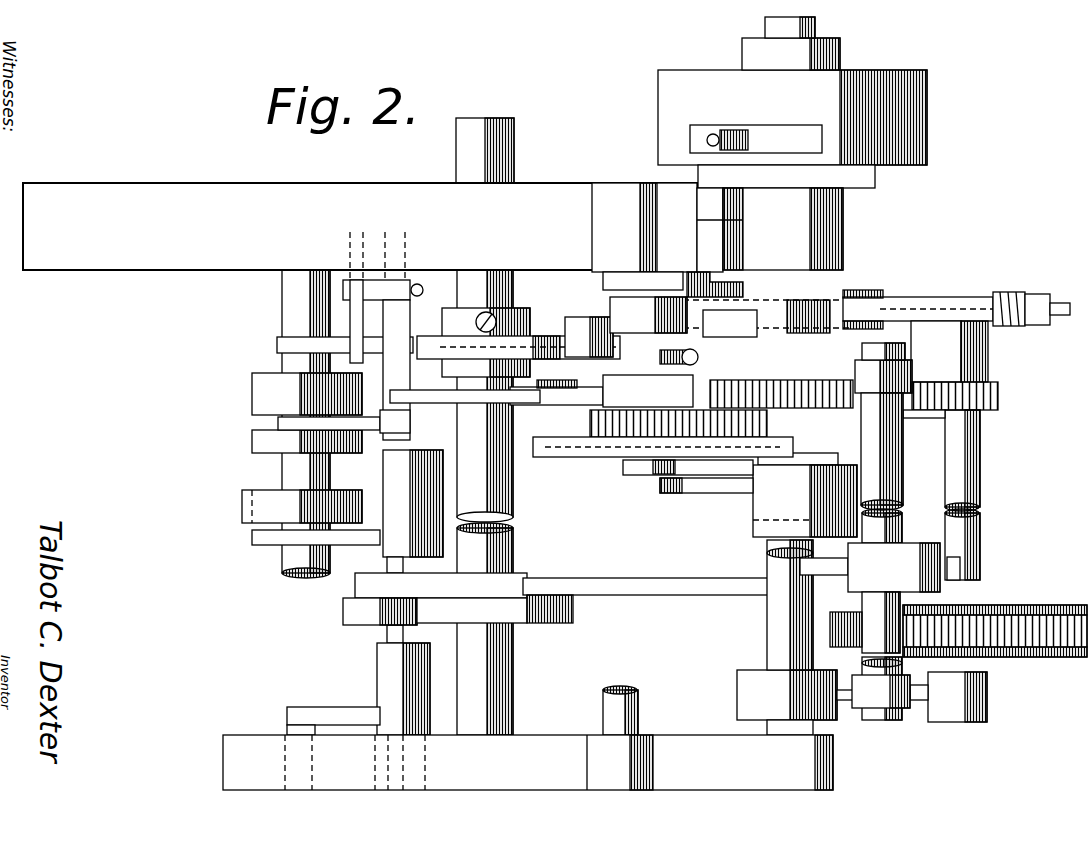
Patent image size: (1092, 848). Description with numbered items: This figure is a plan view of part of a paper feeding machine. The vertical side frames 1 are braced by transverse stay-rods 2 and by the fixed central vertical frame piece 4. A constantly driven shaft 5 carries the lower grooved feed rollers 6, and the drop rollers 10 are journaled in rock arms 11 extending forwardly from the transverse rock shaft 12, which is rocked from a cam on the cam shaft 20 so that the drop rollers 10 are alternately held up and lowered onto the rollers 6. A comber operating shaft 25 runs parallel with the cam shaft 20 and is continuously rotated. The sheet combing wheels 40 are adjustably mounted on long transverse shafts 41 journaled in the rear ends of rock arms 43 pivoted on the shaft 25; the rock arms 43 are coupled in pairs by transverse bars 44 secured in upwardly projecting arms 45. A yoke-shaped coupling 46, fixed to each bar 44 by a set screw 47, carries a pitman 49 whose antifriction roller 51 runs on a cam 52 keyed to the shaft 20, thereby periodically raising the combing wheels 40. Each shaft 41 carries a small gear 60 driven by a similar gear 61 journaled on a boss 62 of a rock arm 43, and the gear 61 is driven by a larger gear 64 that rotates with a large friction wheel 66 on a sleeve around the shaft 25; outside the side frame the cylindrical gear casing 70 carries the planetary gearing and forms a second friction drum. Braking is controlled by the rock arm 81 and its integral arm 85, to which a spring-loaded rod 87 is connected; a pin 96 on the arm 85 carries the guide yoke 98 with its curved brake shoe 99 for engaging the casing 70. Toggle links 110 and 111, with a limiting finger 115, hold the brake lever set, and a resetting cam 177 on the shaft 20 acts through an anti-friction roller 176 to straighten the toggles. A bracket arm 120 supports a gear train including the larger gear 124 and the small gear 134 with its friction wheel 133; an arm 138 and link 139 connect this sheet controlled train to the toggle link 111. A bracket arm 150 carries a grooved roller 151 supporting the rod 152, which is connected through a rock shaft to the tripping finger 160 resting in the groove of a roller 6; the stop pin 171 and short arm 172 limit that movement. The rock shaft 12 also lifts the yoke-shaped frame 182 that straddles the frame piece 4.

The vertical side frames 1 is at (333, 186).
The transverse stay-rods 2 is at (767, 560).
The fixed central vertical frame piece 4 is at (548, 737).
The constantly driven shaft 5 is at (295, 300).
The lower grooved feed rollers 6 is at (265, 395).
The drop rollers 10 is at (248, 512).
The rock arms 11 is at (280, 536).
The transverse rock shaft 12 is at (428, 455).
The cam shaft 20 is at (513, 480).
The comber operating shaft 25 is at (765, 30).
The sheet combing wheels 40 is at (1045, 612).
The transverse shafts 41 is at (975, 482).
The rock arms 43 is at (950, 350).
The transverse bars 44 is at (890, 488).
The upwardly projecting arms 45 is at (890, 710).
The yoke-shaped coupling 46 is at (897, 560).
The set screw 47 is at (961, 563).
The pitman 49 is at (648, 585).
The antifriction roller 51 is at (360, 618).
The cam 52 is at (446, 606).
The small gear wheel 60 is at (1000, 392).
The gear wheel 61 is at (928, 412).
The boss 62 is at (925, 360).
The larger gear 64 is at (782, 388).
The large friction wheel 66 is at (900, 290).
The cylindrical gear casing 70 is at (912, 130).
The rock arm 81 is at (677, 265).
The rock arm 85 is at (725, 290).
The rod 87 is at (922, 300).
The pin 96 is at (712, 133).
The guide yoke 98 is at (875, 178).
The curved brake shoe 99 is at (790, 125).
The toggle link 110 is at (800, 318).
The toggle link 111 is at (690, 325).
The finger 115 is at (757, 318).
The bracket arm 120 is at (668, 478).
The larger gear 124 is at (725, 490).
The friction wheel 133 is at (648, 391).
The small gear wheel 134 is at (625, 445).
The arm 138 is at (662, 360).
The link 139 is at (610, 465).
The bracket arm 150 is at (635, 470).
The grooved roller 151 is at (550, 392).
The rod 152 is at (582, 392).
The tripping finger 160 is at (280, 424).
The stop pin 171 is at (352, 285).
The short arm 172 is at (396, 292).
The anti-friction roller 176 is at (578, 325).
The resetting cam 177 is at (536, 338).
The yoke-shaped frame 182 is at (300, 729).